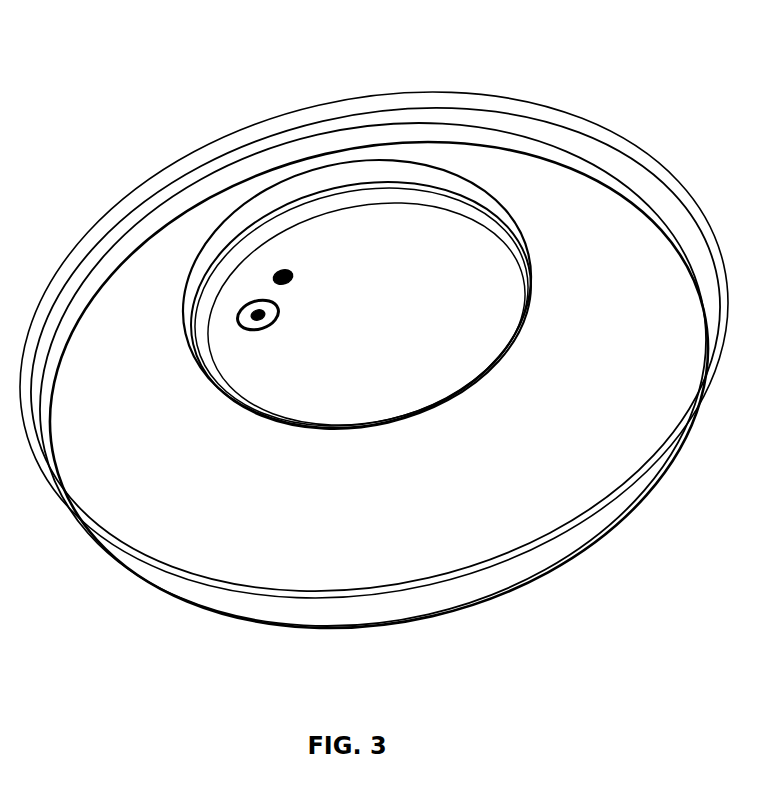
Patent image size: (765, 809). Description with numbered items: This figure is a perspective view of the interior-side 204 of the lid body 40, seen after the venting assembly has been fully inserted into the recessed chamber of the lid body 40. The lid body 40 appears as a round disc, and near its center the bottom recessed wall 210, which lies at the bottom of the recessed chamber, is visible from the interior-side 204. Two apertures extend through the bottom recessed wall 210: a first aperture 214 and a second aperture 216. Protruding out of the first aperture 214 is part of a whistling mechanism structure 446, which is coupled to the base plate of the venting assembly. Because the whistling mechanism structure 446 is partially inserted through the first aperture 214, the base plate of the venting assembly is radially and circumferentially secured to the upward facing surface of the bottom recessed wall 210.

The lid body 40 is at (628, 140).
The interior-side 204 is at (524, 492).
The bottom recessed wall 210 is at (460, 328).
The first aperture 214 is at (263, 297).
The second aperture 216 is at (292, 268).
The whistling mechanism structure 446 is at (271, 318).